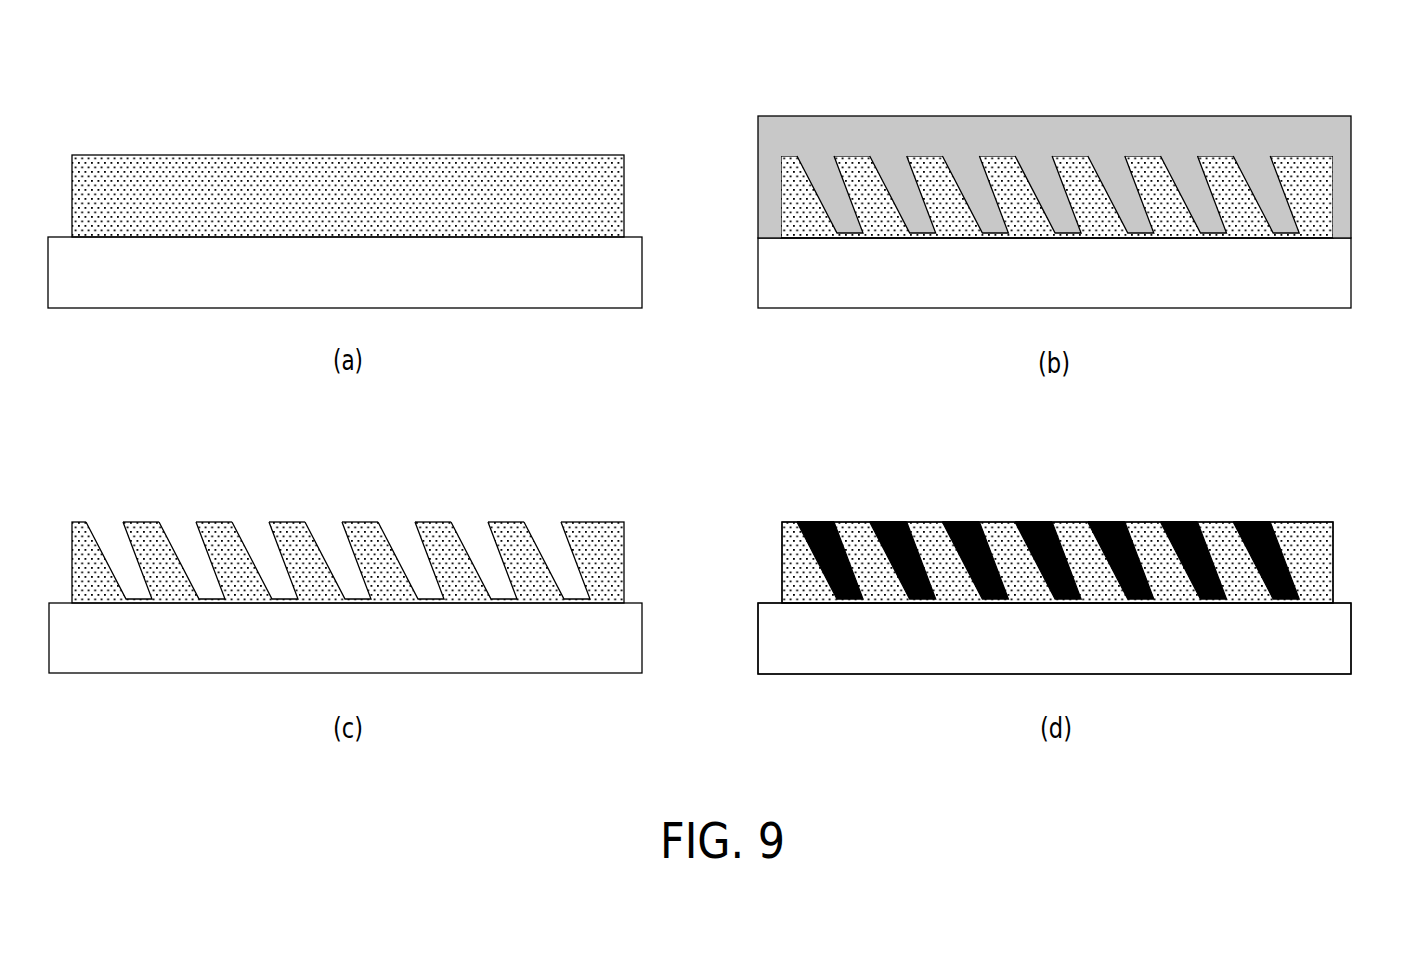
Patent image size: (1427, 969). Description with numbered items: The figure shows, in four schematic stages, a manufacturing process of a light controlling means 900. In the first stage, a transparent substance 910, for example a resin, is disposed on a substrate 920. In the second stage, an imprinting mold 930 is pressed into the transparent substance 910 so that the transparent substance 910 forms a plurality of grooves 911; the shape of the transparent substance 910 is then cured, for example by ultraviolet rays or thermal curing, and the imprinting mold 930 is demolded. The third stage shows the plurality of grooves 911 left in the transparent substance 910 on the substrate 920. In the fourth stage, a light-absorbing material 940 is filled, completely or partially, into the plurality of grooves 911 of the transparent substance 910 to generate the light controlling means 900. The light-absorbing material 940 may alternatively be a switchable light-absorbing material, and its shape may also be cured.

The light controlling means 900 is at (1295, 452).
The transparent substance 910 is at (602, 200).
The grooves 911 is at (895, 213).
The substrate 920 is at (620, 276).
The imprinting mold 930 is at (1235, 133).
The light-absorbing material 940 is at (1185, 522).